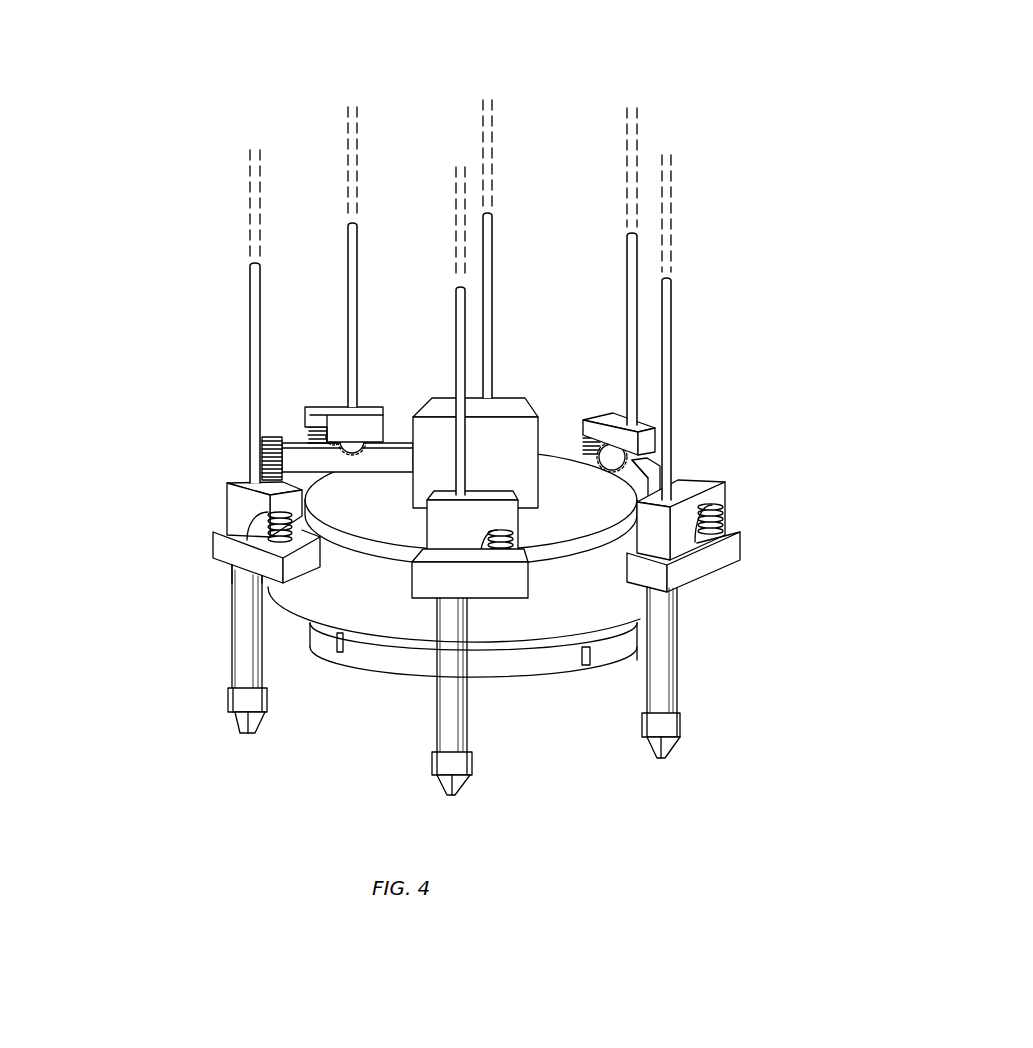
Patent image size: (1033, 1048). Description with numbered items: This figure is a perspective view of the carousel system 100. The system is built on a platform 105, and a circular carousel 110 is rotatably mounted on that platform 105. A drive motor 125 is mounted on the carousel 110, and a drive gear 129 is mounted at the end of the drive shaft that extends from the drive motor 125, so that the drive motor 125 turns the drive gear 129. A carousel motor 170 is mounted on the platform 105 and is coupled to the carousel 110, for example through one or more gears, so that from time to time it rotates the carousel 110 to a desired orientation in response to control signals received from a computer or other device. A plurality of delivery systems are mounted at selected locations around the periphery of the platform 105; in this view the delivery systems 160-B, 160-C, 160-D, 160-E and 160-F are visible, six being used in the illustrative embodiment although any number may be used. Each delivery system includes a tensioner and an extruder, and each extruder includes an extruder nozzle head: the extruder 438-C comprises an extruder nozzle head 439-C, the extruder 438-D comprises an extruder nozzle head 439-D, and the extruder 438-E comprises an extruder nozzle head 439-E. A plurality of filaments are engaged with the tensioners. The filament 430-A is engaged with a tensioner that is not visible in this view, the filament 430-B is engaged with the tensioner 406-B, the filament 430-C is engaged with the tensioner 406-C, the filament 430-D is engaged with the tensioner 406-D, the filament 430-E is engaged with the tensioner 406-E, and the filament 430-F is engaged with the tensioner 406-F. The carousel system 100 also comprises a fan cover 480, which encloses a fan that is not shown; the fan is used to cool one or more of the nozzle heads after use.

The carousel system 100 is at (534, 123).
The platform 105 is at (335, 538).
The circular carousel 110 is at (593, 506).
The drive motor 125 is at (513, 456).
The drive gear 129 is at (271, 435).
The carousel motor 170 is at (673, 470).
The fan cover 480 is at (337, 667).
The filament 430-A is at (492, 238).
The filament 430-B is at (628, 282).
The filament 430-C is at (670, 303).
The filament 430-D is at (456, 310).
The filament 430-E is at (250, 300).
The filament 430-F is at (348, 243).
The tensioner 406-B is at (593, 423).
The tensioner 406-C is at (708, 498).
The tensioner 406-D is at (510, 517).
The tensioner 406-E is at (227, 493).
The tensioner 406-F is at (373, 407).
The delivery system 160-B is at (613, 402).
The delivery system 160-C is at (718, 575).
The delivery system 160-D is at (492, 600).
The delivery system 160-E is at (210, 540).
The delivery system 160-F is at (328, 395).
The extruder 438-C is at (672, 698).
The extruder 438-D is at (437, 725).
The extruder 438-E is at (232, 663).
The extruder nozzle head 439-C is at (670, 750).
The extruder nozzle head 439-D is at (440, 780).
The extruder nozzle head 439-E is at (235, 720).